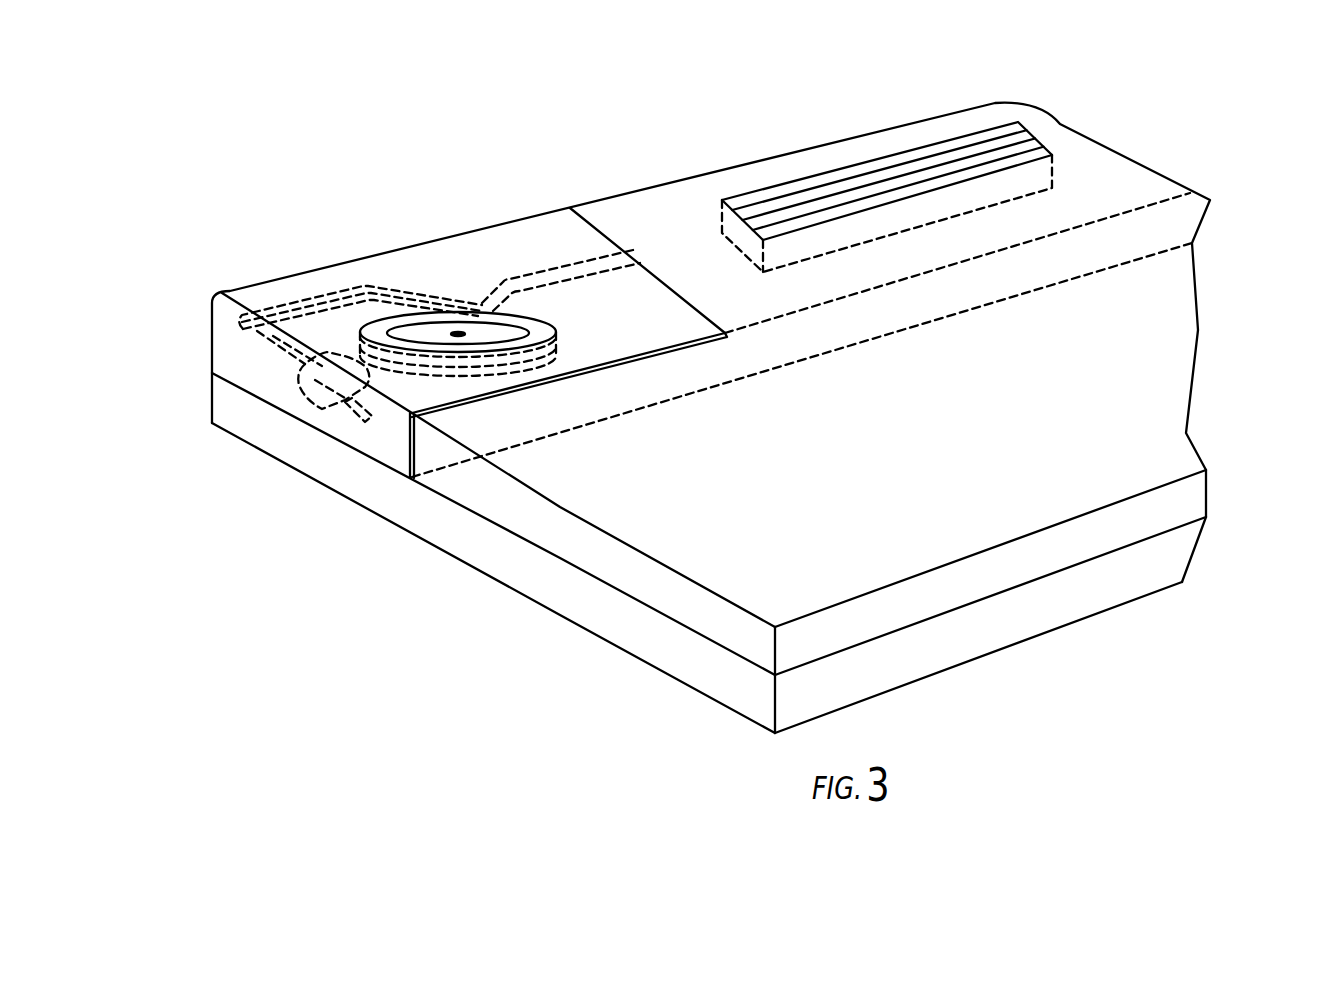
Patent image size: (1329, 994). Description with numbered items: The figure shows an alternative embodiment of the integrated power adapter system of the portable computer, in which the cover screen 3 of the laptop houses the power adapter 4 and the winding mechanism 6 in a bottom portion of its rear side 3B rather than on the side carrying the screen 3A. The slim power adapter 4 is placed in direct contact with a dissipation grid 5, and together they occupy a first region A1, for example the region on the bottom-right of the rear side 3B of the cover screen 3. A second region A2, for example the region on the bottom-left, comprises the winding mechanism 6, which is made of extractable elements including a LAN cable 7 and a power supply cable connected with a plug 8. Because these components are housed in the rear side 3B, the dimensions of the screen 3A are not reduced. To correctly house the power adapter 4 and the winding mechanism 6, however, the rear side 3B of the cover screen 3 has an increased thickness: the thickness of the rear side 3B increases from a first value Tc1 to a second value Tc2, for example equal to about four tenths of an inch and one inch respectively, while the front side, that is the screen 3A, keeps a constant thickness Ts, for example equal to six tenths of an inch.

The cover screen 3 is at (1210, 237).
The screen 3A is at (523, 572).
The rear side 3B is at (1025, 557).
The power adapter 4 is at (947, 203).
The dissipation grid 5 is at (790, 175).
The winding mechanism 6 is at (428, 287).
The LAN cable 7 is at (320, 298).
The plug 8 is at (340, 400).
The first region A1 is at (885, 138).
The second region A2 is at (532, 237).
The first thickness value Tc1 is at (792, 628).
The second thickness value Tc2 is at (190, 285).
The constant thickness Ts is at (190, 358).